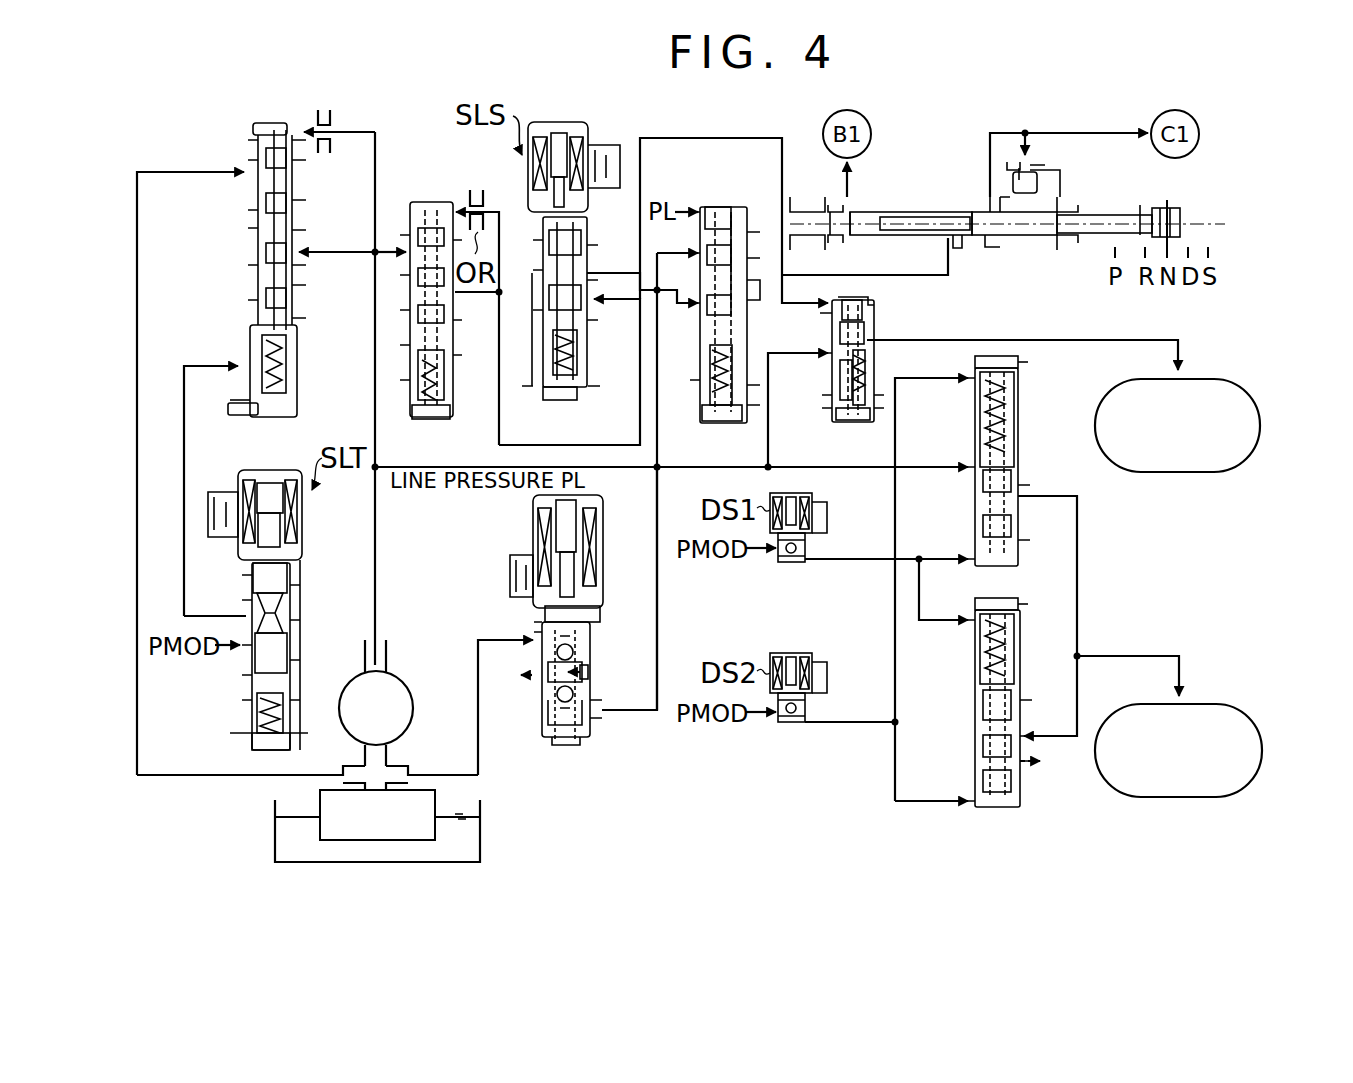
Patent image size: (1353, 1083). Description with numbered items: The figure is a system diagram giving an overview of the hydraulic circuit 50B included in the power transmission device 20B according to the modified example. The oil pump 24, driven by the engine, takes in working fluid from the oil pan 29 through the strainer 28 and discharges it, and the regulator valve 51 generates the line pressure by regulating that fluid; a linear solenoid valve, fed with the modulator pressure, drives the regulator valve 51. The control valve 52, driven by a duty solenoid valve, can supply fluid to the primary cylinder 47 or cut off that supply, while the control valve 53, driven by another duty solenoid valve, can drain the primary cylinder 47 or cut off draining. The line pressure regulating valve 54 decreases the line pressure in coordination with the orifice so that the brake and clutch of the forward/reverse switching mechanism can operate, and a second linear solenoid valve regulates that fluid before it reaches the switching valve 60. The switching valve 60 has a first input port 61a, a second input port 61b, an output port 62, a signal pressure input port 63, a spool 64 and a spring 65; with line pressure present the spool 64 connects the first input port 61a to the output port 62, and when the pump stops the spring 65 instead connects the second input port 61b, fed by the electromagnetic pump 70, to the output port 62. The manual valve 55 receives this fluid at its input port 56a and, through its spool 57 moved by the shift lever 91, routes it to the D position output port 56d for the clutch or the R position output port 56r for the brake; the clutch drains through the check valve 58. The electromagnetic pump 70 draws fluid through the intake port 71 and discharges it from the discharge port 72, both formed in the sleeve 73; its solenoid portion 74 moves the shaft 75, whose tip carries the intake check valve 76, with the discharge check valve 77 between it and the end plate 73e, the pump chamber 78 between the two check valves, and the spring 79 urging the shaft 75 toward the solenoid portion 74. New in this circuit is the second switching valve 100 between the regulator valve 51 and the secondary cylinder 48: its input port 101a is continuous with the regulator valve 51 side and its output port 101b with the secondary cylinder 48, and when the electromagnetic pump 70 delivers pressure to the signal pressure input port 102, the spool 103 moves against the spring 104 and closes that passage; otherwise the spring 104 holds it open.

The regulator valve 51 is at (245, 157).
The line pressure regulating valve 54 is at (454, 199).
The switching valve 60 is at (735, 198).
The signal pressure input port 63 is at (707, 207).
The second input port 61b is at (708, 250).
The spool 64 is at (733, 248).
The output port 62 is at (747, 288).
The first input port 61a is at (708, 313).
The spring 65 is at (710, 363).
The manual valve 55 is at (926, 196).
The R position output port 56r is at (852, 211).
The D position output port 56d is at (988, 210).
The spool 57 is at (1031, 230).
The input port 56a is at (955, 243).
The shift lever 91 is at (1182, 215).
The check valve 58 is at (1052, 158).
The second switching valve 100 is at (834, 424).
The spool 103 is at (873, 313).
The output port 101b is at (874, 333).
The signal pressure input port 102 is at (832, 313).
The spring 104 is at (873, 371).
The input port 101a is at (842, 360).
The control valve 52 is at (1030, 400).
The control valve 53 is at (960, 720).
The secondary cylinder 48 is at (1178, 475).
The primary cylinder 47 is at (1178, 800).
The oil pump 24 is at (411, 680).
The strainer 28 is at (322, 803).
The oil pan 29 is at (480, 830).
The electromagnetic pump 70 is at (588, 752).
The solenoid portion 74 is at (532, 535).
The shaft 75 is at (572, 594).
The sleeve 73 is at (590, 627).
The intake port 71 is at (534, 627).
The intake check valve 76 is at (549, 651).
The pump chamber 78 is at (603, 647).
The spring 79 is at (549, 677).
The discharge port 72 is at (592, 700).
The discharge check valve 77 is at (550, 693).
The end plate 73e is at (570, 737).
The hydraulic circuit 50B is at (681, 774).
The power transmission device 20B is at (1280, 796).